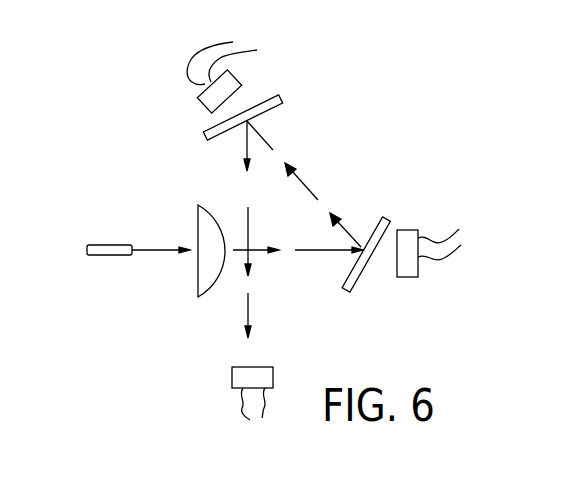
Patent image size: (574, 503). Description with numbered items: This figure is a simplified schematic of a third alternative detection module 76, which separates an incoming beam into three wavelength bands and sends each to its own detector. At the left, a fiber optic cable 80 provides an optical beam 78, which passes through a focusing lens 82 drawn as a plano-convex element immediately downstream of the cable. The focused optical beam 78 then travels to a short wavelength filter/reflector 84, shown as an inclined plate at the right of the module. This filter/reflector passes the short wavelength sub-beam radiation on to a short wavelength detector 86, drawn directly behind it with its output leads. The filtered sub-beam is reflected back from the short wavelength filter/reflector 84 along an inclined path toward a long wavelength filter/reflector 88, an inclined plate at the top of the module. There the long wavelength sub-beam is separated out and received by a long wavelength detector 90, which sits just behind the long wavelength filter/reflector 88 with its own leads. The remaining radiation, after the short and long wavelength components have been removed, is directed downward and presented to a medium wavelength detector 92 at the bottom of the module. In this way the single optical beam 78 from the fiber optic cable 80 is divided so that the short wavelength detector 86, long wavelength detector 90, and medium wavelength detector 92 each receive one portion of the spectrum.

The third alternative detection module 76 is at (112, 190).
The optical beam 78 is at (150, 252).
The fiber optic cable 80 is at (118, 256).
The focusing lens 82 is at (198, 227).
The short wavelength filter/reflector 84 is at (386, 215).
The short wavelength detector 86 is at (408, 278).
The long wavelength filter/reflector 88 is at (208, 129).
The long wavelength detector 90 is at (238, 77).
The medium wavelength detector 92 is at (273, 370).